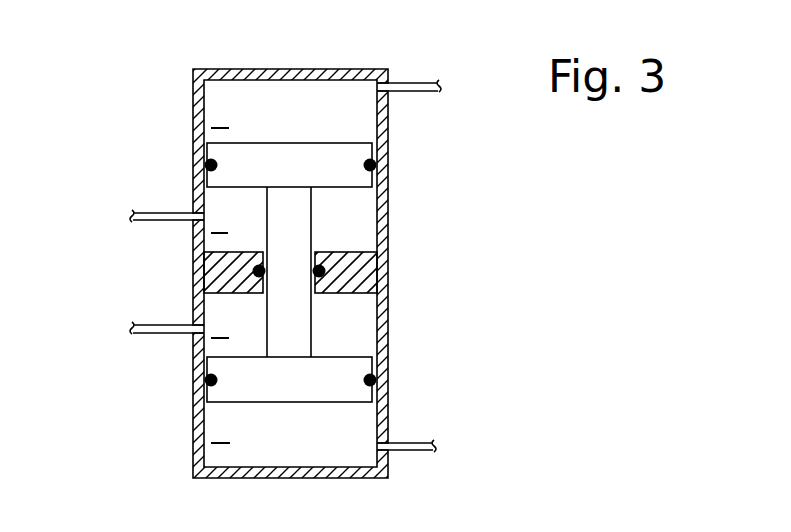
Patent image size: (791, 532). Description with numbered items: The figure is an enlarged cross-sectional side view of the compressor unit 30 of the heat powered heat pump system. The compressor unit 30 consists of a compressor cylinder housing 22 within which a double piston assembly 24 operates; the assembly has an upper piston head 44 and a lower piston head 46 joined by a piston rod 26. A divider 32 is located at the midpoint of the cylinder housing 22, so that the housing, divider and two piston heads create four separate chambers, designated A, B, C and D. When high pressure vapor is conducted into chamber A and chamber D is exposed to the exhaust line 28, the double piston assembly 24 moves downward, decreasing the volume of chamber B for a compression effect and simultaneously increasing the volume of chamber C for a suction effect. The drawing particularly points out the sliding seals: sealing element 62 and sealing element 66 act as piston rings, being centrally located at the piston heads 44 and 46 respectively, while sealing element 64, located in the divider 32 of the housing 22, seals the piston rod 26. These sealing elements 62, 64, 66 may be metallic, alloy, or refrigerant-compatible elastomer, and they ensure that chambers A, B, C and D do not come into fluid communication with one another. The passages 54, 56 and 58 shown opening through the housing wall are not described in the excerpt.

The compressor unit 30 is at (140, 88).
The compressor cylinder housing 22 is at (236, 69).
The double piston assembly 24 is at (274, 407).
The piston rod 26 is at (287, 318).
The exhaust line 28 is at (405, 452).
The divider 32 is at (200, 266).
The piston head 44 is at (234, 160).
The piston head 46 is at (243, 373).
The upper port 54 is at (402, 83).
The port C 56 is at (160, 325).
The port B 58 is at (157, 213).
The sealing element 62 is at (378, 162).
The sealing element 64 is at (325, 269).
The sealing element 66 is at (375, 380).